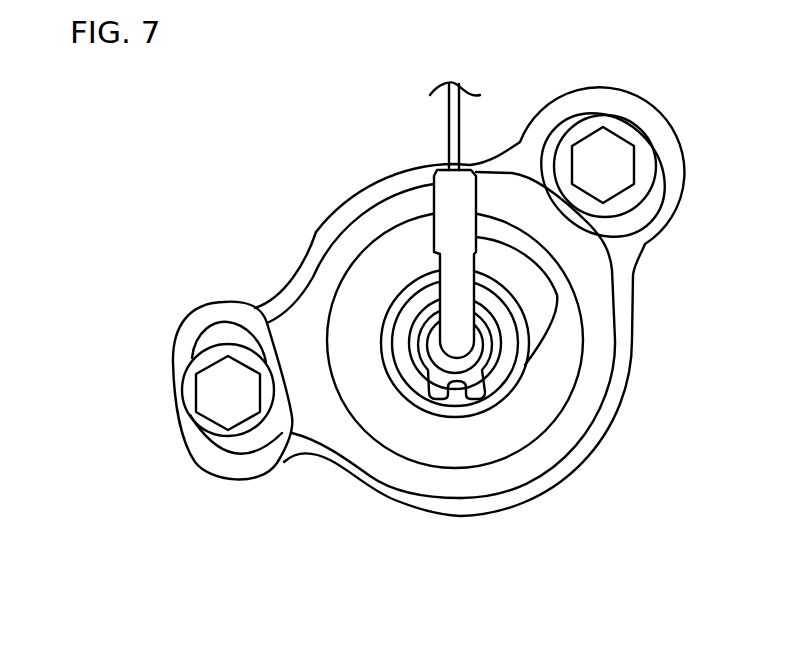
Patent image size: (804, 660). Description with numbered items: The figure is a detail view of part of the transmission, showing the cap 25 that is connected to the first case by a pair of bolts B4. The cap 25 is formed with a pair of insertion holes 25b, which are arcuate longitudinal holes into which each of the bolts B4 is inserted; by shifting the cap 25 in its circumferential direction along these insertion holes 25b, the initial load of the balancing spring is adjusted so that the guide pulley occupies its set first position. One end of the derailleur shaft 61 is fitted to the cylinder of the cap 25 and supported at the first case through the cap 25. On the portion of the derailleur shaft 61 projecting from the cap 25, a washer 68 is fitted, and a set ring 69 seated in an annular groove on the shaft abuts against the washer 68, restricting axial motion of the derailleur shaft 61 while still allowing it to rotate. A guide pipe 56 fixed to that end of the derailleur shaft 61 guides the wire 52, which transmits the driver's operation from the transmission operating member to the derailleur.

The cap 25 is at (475, 443).
The insertion holes 25b is at (203, 336).
The bolts B4 is at (227, 400).
The wire 52 is at (443, 120).
The guide pipe 56 is at (447, 235).
The derailleur shaft 61 is at (482, 350).
The washer 68 is at (507, 382).
The set ring 69 is at (422, 367).